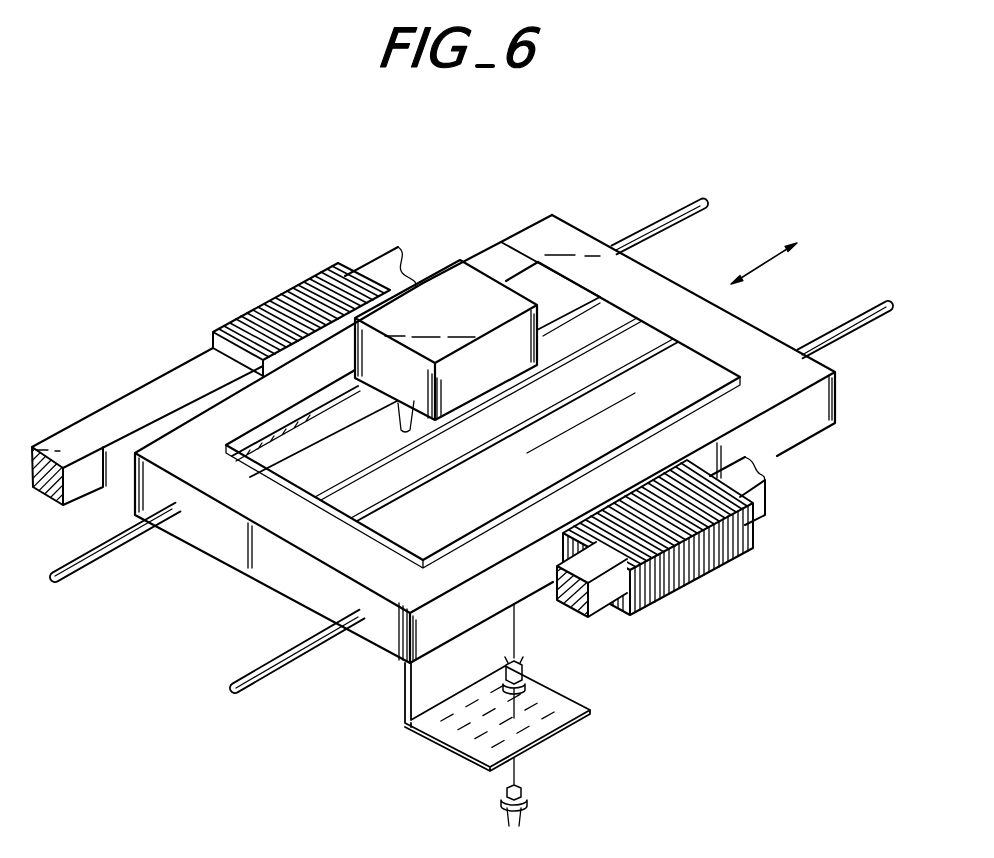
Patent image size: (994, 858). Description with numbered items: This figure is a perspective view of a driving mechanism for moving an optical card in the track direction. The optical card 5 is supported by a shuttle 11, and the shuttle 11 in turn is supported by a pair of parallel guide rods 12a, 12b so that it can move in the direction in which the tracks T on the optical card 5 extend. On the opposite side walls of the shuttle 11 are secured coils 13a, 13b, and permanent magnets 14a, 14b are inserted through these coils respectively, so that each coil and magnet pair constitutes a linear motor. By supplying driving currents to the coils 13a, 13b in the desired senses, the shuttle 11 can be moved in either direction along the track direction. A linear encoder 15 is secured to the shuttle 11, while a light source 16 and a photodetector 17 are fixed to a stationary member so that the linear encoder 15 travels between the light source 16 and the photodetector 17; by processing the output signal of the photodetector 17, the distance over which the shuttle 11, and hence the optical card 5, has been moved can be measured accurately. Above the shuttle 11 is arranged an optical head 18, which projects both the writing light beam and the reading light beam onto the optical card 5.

The optical card 5 is at (527, 278).
The shuttle 11 is at (760, 352).
The guide rod 12a is at (113, 548).
The guide rod 12b is at (273, 660).
The coil 13a is at (277, 296).
The coil 13b is at (707, 580).
The permanent magnet 14a is at (165, 372).
The permanent magnet 14b is at (775, 502).
The linear encoder 15 is at (470, 752).
The light source 16 is at (528, 802).
The photodetector 17 is at (528, 672).
The optical head 18 is at (443, 276).
The track T is at (618, 326).